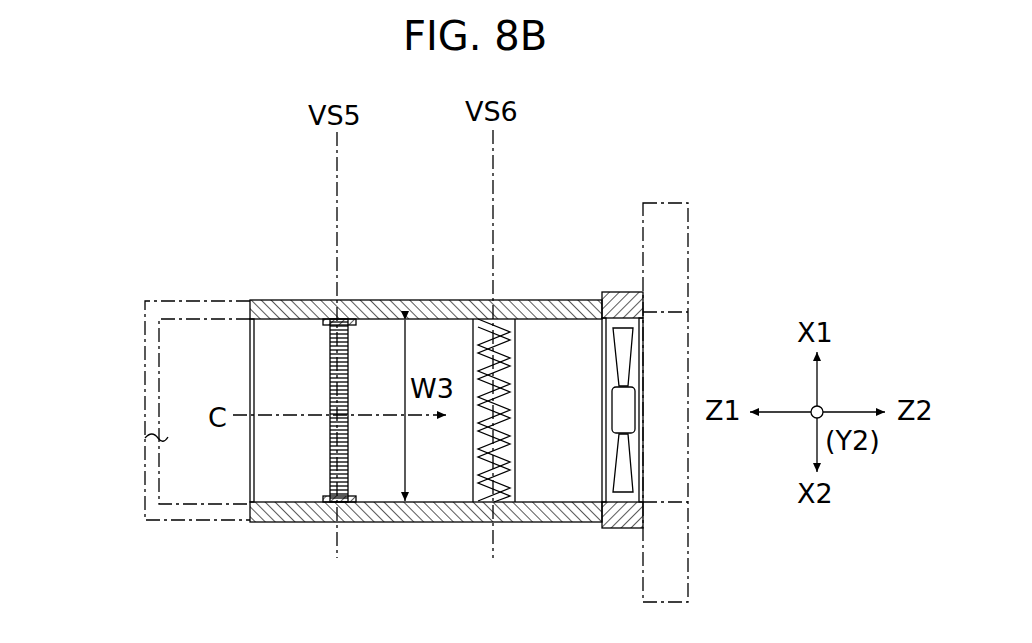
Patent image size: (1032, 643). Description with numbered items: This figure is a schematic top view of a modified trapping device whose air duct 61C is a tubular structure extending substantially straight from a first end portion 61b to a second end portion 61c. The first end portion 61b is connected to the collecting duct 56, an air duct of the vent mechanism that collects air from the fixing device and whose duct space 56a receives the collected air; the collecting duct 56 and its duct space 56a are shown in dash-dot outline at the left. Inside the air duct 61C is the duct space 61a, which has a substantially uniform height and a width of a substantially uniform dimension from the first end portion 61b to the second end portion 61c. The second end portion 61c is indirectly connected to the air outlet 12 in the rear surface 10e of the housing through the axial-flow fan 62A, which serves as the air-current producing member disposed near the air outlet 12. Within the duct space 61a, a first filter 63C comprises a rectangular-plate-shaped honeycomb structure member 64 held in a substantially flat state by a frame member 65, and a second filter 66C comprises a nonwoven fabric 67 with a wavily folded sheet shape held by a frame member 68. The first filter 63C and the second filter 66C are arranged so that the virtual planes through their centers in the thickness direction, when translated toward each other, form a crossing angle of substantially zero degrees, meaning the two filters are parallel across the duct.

The rear surface 10e is at (673, 198).
The air outlet 12 is at (663, 312).
The collecting duct 56 is at (149, 410).
The duct space 56a is at (147, 438).
The air duct 61C is at (394, 398).
The duct space 61a is at (435, 487).
The first end portion 61b is at (252, 480).
The second end portion 61c is at (597, 512).
The axial-flow fan 62A is at (622, 290).
The first filter 63C is at (306, 368).
The honeycomb structure member 64 is at (330, 391).
The frame member 65 is at (330, 491).
The second filter 66C is at (496, 365).
The nonwoven fabric 67 is at (507, 403).
The frame member 68 is at (513, 330).